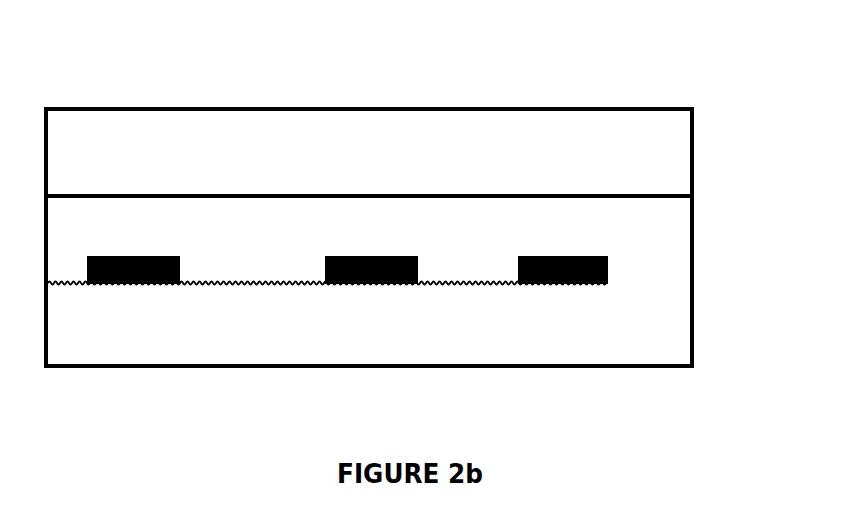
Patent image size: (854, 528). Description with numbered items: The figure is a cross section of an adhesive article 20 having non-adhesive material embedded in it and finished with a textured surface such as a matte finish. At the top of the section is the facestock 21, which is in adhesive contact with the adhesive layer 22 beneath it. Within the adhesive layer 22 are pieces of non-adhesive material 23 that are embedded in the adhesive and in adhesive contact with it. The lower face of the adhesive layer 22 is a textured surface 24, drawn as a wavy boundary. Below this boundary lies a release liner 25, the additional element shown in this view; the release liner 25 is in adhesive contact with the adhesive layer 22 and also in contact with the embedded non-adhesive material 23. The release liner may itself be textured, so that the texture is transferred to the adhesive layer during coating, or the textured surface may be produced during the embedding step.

The article 20 is at (142, 89).
The facestock 21 is at (693, 152).
The adhesive layer 22 is at (693, 238).
The non-adhesive material 23 is at (574, 286).
The textured surface 24 is at (638, 286).
The release liner 25 is at (693, 327).